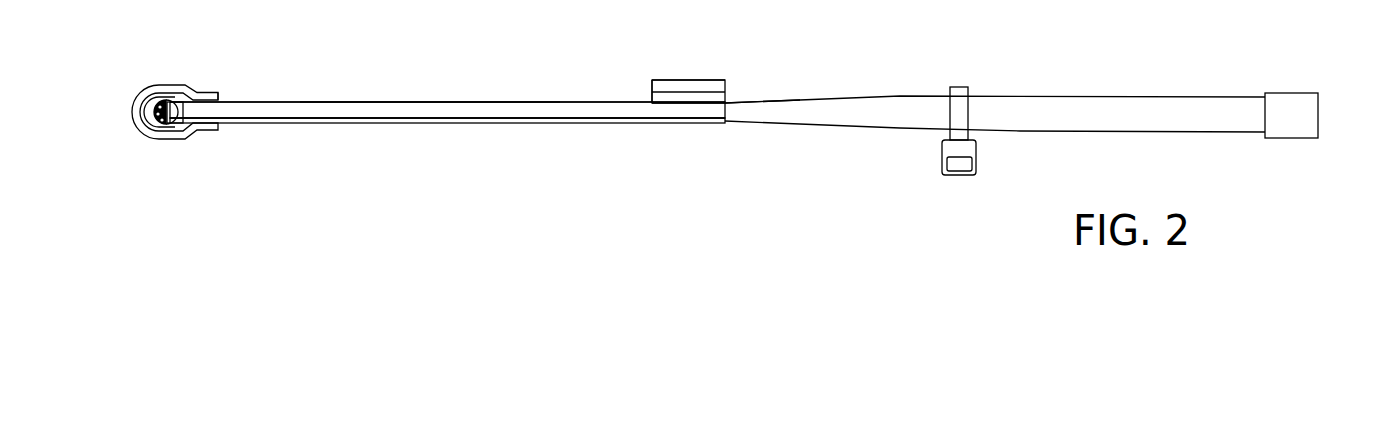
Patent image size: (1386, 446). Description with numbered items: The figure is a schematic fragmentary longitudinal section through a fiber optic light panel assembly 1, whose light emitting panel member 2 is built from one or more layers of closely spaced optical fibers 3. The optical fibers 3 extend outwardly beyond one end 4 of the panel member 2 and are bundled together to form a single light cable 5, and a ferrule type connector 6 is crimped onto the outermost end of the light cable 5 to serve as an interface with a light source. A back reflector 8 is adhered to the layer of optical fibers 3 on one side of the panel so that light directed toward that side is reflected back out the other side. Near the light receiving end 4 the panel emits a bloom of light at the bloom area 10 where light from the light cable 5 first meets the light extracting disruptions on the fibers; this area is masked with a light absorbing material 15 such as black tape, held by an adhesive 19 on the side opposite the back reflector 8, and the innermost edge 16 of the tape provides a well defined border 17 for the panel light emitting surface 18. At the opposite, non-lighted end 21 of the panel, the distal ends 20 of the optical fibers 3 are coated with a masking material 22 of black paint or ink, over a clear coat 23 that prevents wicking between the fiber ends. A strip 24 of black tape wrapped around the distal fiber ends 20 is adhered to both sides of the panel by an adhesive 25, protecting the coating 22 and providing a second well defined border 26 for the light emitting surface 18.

The fiber optic light panel assembly 1 is at (541, 88).
The light emitting panel member 2 is at (458, 98).
The optical fibers 3 is at (492, 110).
The end of panel member 4 is at (738, 92).
The light cable 5 is at (893, 105).
The ferrule type connector 6 is at (1285, 105).
The back reflector 8 is at (587, 125).
The bloom area 10 is at (684, 90).
The light absorbing material 15 is at (703, 82).
The innermost edge of tape 16 is at (652, 82).
The border 17 is at (652, 100).
The panel light emitting surface 18 is at (430, 98).
The adhesive 19 is at (700, 105).
The distal ends of optical fibers 20 is at (180, 107).
The non-lighted end of light panel 21 is at (160, 139).
The masking material 22 is at (158, 103).
The clear coat 23 is at (160, 108).
The strip of black tape 24 is at (195, 88).
The adhesive 25 is at (190, 133).
The border 26 is at (218, 94).